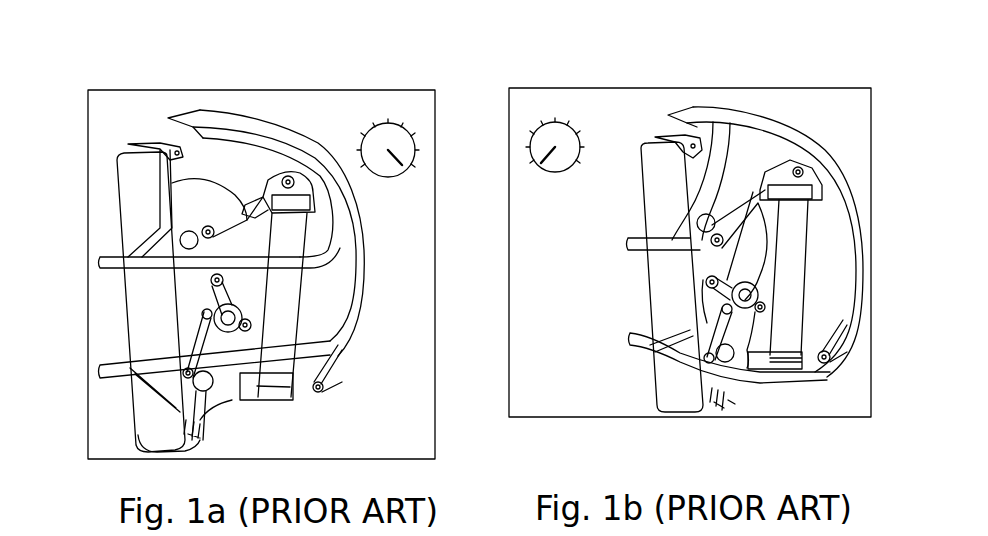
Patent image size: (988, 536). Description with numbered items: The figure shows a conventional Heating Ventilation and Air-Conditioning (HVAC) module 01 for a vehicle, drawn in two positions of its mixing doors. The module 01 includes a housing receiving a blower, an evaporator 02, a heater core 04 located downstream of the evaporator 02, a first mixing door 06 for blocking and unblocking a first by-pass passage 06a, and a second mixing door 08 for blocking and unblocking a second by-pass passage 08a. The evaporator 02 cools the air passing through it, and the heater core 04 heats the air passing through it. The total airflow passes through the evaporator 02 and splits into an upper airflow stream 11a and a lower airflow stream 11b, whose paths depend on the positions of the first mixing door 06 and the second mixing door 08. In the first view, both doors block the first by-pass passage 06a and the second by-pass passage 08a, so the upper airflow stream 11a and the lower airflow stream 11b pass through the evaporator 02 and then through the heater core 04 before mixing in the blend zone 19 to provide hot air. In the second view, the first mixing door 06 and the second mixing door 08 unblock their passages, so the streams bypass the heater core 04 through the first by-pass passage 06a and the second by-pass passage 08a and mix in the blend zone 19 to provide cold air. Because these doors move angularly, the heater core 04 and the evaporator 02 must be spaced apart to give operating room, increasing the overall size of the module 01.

In FIG. 1A, the Heating Ventilation and Air-Conditioning (HVAC) module 01 is at (417, 127).
In FIG. 1B, the Heating Ventilation and Air-Conditioning (HVAC) module 01 is at (838, 150).
In FIG. 1A, the evaporator 02 is at (143, 193).
In FIG. 1B, the evaporator 02 is at (653, 222).
In FIG. 1A, the heater core 04 is at (295, 303).
In FIG. 1B, the heater core 04 is at (808, 278).
In FIG. 1A, the first mixing door 06 is at (217, 405).
In FIG. 1B, the first mixing door 06 is at (828, 370).
In FIG. 1A, the first by-pass passage 06a is at (227, 442).
In FIG. 1B, the first by-pass passage 06a is at (728, 415).
In FIG. 1A, the second mixing door 08 is at (197, 202).
In FIG. 1B, the second mixing door 08 is at (755, 193).
In FIG. 1A, the second by-pass passage 08a is at (197, 177).
In FIG. 1B, the second by-pass passage 08a is at (710, 215).
In FIG. 1A, the upper airflow stream 11a is at (133, 270).
In FIG. 1B, the upper airflow stream 11a is at (643, 288).
In FIG. 1A, the lower airflow stream 11b is at (117, 373).
In FIG. 1B, the lower airflow stream 11b is at (630, 378).
In FIG. 1A, the blend zone 19 is at (197, 118).
In FIG. 1B, the blend zone 19 is at (688, 156).